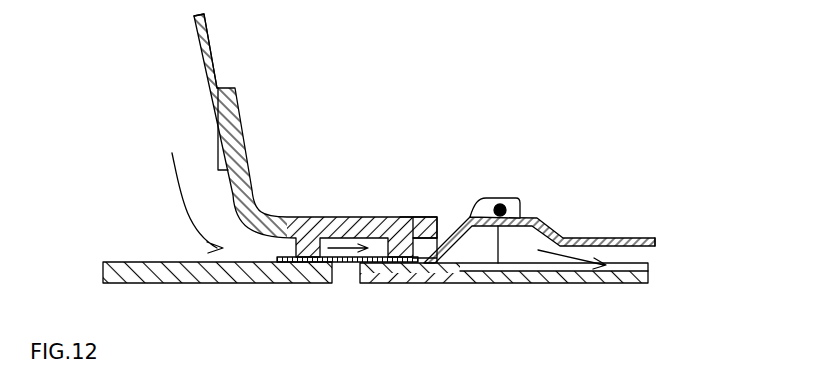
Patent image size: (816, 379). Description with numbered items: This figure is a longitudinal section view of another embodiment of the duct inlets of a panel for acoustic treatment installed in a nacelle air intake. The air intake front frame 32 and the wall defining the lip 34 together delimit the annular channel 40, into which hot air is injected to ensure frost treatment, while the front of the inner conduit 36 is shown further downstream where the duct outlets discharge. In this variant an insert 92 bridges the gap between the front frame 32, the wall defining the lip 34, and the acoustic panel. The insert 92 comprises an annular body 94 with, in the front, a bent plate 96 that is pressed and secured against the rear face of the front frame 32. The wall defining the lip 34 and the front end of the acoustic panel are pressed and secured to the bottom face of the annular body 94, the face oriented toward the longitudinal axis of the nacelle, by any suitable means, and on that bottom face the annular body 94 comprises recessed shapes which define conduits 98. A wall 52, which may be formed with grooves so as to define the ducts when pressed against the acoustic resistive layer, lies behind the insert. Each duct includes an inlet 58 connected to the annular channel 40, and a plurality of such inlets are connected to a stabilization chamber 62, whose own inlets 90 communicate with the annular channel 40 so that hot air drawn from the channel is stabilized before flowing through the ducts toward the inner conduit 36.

The front frame 32 is at (205, 42).
The lip 34 is at (184, 284).
The inner conduit 36 is at (504, 291).
The annular channel 40 is at (157, 162).
The wall 52 is at (648, 246).
The inlet 58 is at (571, 250).
The stabilization chamber 62 is at (493, 240).
The inlets of stabilization chamber 90 is at (462, 256).
The insert 92 is at (345, 212).
The annular body 94 is at (409, 223).
The bent plate 96 is at (243, 175).
The conduits 98 is at (366, 256).